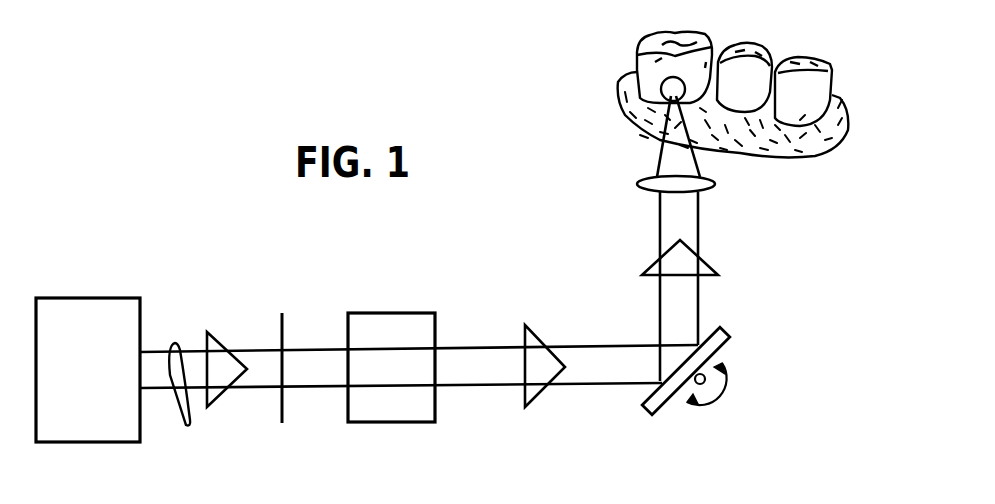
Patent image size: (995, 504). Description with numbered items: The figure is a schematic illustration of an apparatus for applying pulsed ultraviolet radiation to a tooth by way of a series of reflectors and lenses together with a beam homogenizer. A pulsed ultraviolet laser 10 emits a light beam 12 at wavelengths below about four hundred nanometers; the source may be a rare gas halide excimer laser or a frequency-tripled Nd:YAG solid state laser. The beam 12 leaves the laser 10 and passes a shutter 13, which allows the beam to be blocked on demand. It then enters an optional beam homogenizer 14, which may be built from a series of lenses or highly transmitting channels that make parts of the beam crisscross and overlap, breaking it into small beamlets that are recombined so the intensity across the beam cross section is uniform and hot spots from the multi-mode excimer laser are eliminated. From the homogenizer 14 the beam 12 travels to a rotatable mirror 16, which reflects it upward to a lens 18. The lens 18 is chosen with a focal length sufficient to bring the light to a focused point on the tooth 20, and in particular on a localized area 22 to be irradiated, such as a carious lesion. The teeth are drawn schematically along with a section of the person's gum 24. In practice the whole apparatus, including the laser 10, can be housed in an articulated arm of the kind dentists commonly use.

The pulsed ultraviolet laser 10 is at (102, 433).
The light beam 12 is at (188, 400).
The shutter 13 is at (280, 408).
The beam homogenizer 14 is at (406, 383).
The rotatable mirror 16 is at (725, 328).
The lens 18 is at (705, 186).
The tooth 20 is at (652, 40).
The localized area 22 is at (662, 99).
The gum 24 is at (800, 152).